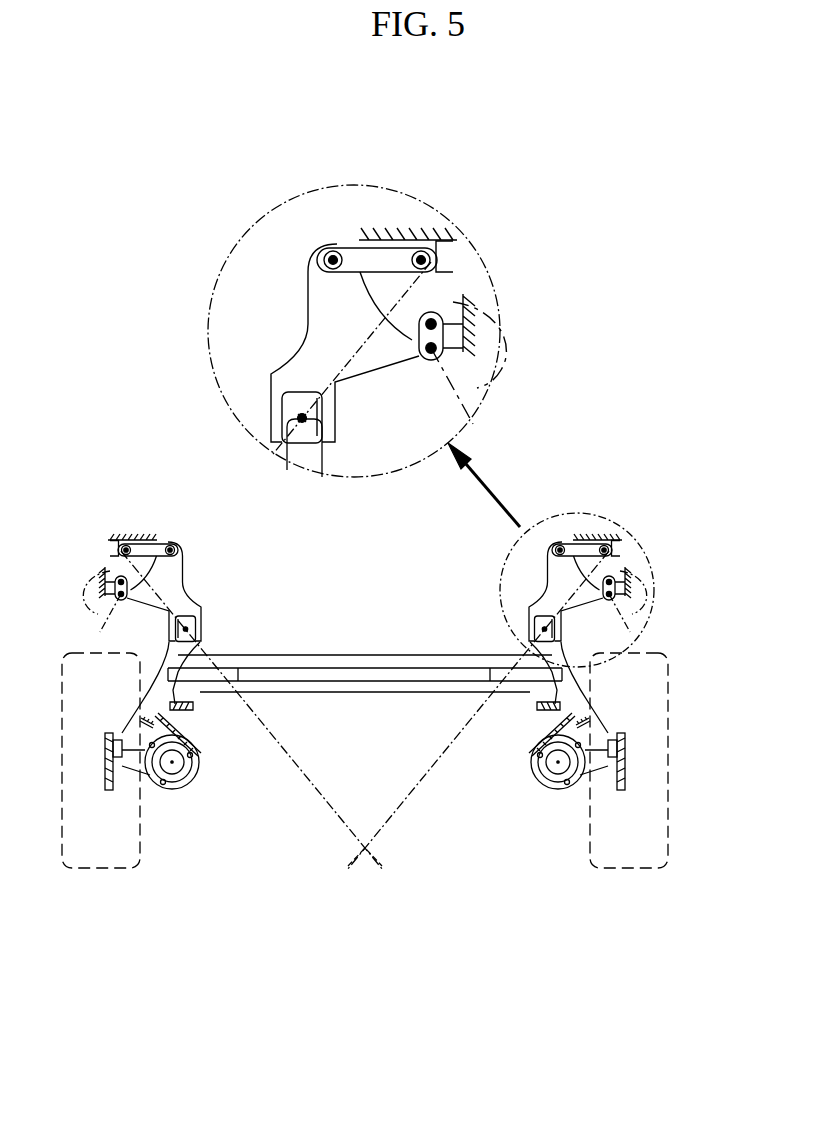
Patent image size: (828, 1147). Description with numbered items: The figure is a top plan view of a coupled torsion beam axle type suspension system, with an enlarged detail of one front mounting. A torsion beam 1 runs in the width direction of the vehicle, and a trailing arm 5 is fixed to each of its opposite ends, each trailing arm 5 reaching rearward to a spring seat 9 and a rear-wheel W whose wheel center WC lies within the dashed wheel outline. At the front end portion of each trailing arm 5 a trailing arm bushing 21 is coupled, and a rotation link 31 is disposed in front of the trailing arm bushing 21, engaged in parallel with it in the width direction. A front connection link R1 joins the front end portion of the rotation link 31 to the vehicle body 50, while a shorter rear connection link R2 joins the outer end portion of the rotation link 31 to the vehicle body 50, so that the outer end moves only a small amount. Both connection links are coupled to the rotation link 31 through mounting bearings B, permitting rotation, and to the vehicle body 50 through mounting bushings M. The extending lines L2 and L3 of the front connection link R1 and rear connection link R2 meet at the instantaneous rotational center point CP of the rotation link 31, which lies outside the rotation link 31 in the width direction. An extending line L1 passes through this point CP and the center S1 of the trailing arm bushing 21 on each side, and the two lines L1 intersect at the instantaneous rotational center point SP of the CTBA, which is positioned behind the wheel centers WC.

The torsion beam 1 is at (365, 695).
The trailing arm 5 is at (184, 720).
The spring seat 9 is at (197, 776).
The trailing arm bushing 21 is at (197, 626).
The rotation link 31 is at (187, 580).
The vehicle body 50 is at (126, 544).
The mounting bearing B is at (305, 254).
The instantaneous rotational center point of rotation link CP is at (120, 560).
The extending line L1 is at (321, 800).
The extending line of front connection link L2 is at (151, 544).
The extending line of rear connection link L3 is at (105, 587).
The mounting bushing M is at (425, 241).
The front connection link R1 is at (176, 544).
The rear connection link R2 is at (118, 604).
The center of trailing arm bushing S1 is at (196, 632).
The instantaneous rotational center point of CTBA SP is at (367, 862).
The rear-wheel W is at (107, 868).
The wheel center WC is at (100, 762).